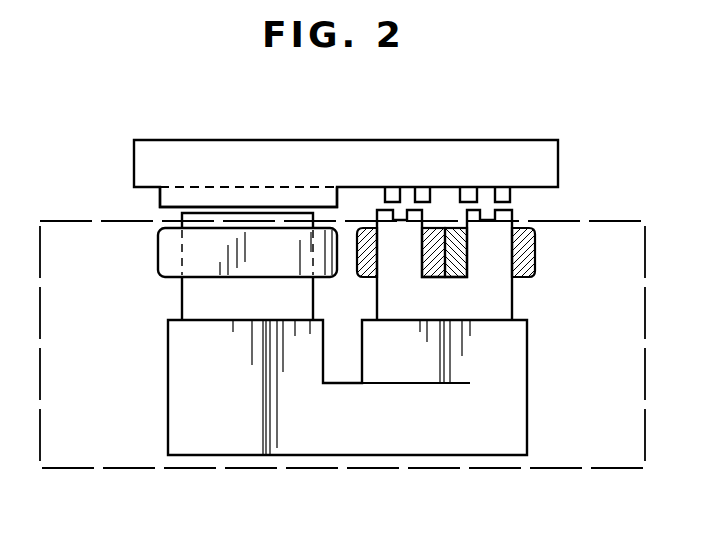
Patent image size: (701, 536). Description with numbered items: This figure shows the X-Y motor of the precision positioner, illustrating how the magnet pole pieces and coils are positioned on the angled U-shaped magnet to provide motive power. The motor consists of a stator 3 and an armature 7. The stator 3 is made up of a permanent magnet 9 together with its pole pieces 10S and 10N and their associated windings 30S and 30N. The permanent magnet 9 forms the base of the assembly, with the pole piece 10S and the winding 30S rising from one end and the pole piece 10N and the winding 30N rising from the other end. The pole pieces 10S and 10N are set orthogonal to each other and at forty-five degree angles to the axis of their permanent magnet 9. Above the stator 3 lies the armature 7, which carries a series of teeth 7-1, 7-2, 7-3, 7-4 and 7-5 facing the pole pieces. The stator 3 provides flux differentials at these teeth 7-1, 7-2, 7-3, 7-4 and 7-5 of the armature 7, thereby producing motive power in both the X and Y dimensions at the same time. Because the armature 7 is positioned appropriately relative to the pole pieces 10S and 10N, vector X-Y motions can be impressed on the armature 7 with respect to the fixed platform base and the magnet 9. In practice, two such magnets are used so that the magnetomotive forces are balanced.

The stator 3 is at (68, 221).
The armature 7 is at (366, 151).
The tooth 7-1 is at (391, 197).
The tooth 7-2 is at (423, 197).
The tooth 7-3 is at (468, 197).
The tooth 7-4 is at (505, 197).
The tooth 7-5 is at (226, 197).
The pole piece 10S is at (182, 298).
The pole piece 10N is at (512, 292).
The winding 30S is at (158, 252).
The winding 30N is at (445, 240).
The permanent magnet 9 is at (168, 398).